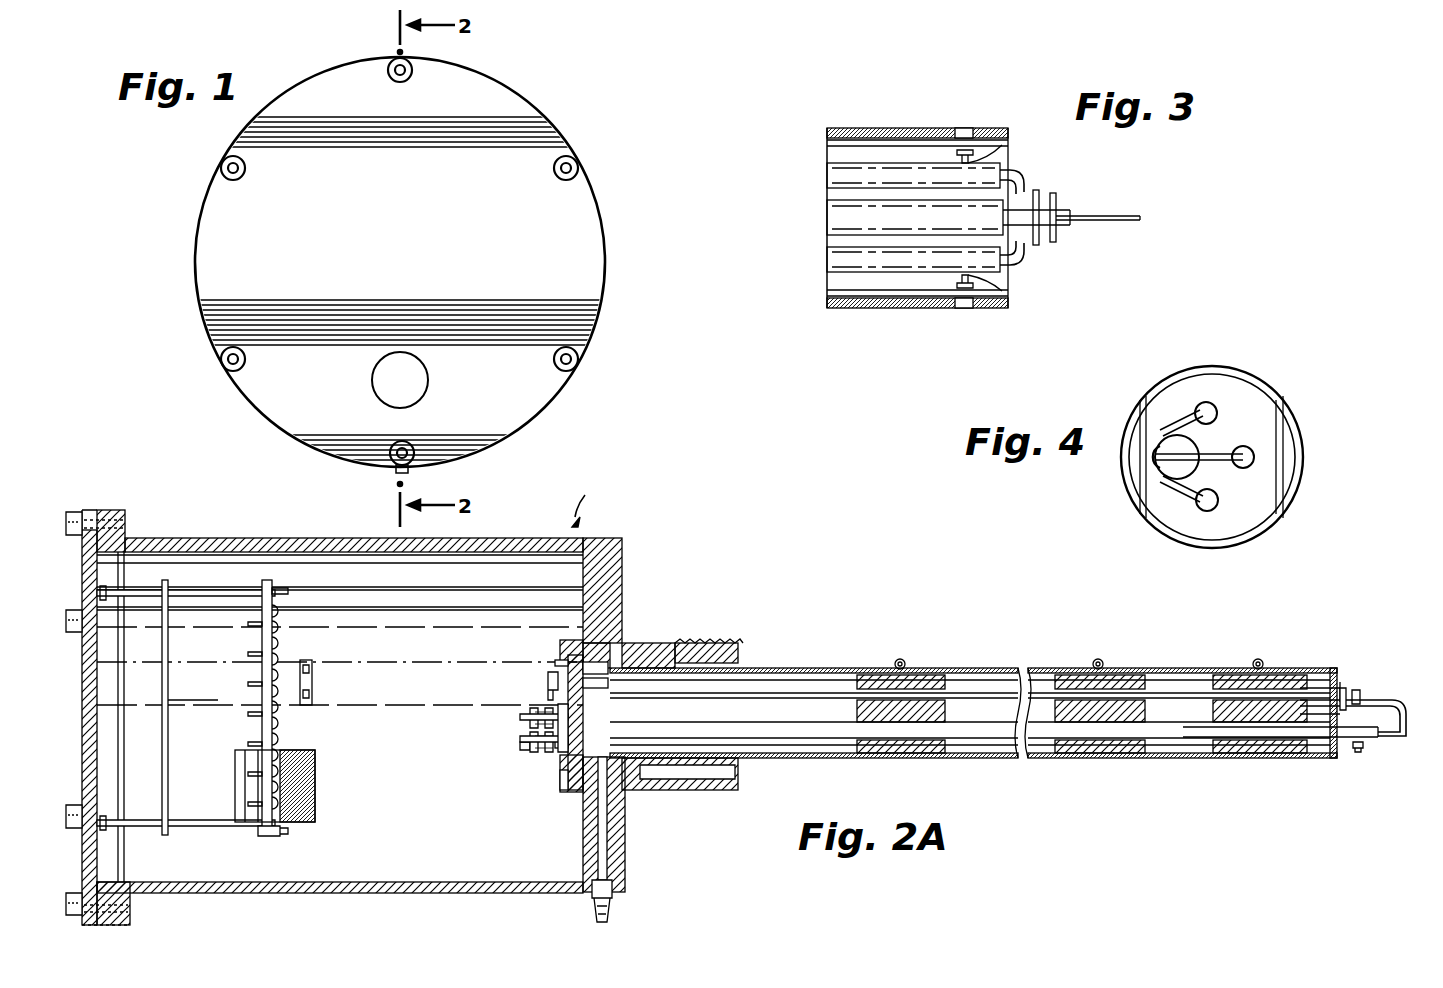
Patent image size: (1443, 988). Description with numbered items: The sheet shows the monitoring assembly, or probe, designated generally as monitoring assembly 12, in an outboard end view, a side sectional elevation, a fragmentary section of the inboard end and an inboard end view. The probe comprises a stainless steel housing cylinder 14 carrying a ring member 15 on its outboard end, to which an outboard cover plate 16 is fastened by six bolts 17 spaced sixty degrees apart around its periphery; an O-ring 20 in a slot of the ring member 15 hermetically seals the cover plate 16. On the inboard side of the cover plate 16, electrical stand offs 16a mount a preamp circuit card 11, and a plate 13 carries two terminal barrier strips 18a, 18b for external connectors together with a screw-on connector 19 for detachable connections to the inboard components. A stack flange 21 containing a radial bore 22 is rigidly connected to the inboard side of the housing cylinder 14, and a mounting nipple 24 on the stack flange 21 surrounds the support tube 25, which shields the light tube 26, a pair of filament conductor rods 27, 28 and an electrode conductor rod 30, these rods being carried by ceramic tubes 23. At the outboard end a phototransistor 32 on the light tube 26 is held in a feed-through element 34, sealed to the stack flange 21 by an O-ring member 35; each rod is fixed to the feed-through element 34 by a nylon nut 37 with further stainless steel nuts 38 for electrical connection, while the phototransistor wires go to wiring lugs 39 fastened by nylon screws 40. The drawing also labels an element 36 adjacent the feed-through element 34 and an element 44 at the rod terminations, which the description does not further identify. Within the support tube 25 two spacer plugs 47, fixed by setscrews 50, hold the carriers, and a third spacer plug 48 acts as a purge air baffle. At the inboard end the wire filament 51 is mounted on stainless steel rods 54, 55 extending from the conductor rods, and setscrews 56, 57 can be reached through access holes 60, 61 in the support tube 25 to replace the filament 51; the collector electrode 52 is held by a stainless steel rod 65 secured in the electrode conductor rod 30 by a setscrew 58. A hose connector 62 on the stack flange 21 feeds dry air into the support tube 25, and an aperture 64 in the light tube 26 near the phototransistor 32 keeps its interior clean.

In FIG. 2A, the preamp circuit card 11 is at (168, 754).
In FIG. 2A, the monitoring assembly 12 is at (593, 504).
In FIG. 2A, the plate 13 is at (273, 838).
In FIG. 2A, the housing cylinder 14 is at (378, 540).
In FIG. 2A, the ring member 15 is at (125, 536).
In FIG. 1, the outboard cover plate 16 is at (514, 117).
In FIG. 2A, the outboard cover plate 16 is at (82, 680).
In FIG. 2A, the electrical stand offs 16a is at (190, 828).
In FIG. 1, the bolts 17 is at (408, 444).
In FIG. 2A, the bolts 17 is at (74, 894).
In FIG. 2A, the terminal barrier strip 18a is at (262, 642).
In FIG. 2A, the terminal barrier strip 18b is at (314, 662).
In FIG. 2A, the screw-on connector 19 is at (314, 792).
In FIG. 2A, the O-ring 20 is at (108, 884).
In FIG. 2A, the stack flange 21 is at (620, 566).
In FIG. 2A, the radial bore 22 is at (607, 838).
In FIG. 2A, the ceramic tubes 23 is at (994, 674).
In FIG. 2A, the mounting nipple 24 is at (644, 648).
In FIG. 4, the support tube 25 is at (1292, 436).
In FIG. 2A, the support tube 25 is at (810, 668).
In FIG. 3, the light tube 26 is at (832, 220).
In FIG. 4, the light tube 26 is at (1152, 460).
In FIG. 2A, the light tube 26 is at (1282, 682).
In FIG. 3, the filament conductor rod 27 is at (832, 264).
In FIG. 4, the filament conductor rod 27 is at (1216, 506).
In FIG. 2A, the filament conductor rod 27 is at (1330, 680).
In FIG. 3, the filament conductor rod 28 is at (828, 174).
In FIG. 4, the filament conductor rod 28 is at (1217, 424).
In FIG. 3, the electrode conductor rod 30 is at (1072, 232).
In FIG. 4, the electrode conductor rod 30 is at (1252, 456).
In FIG. 2A, the electrode conductor rod 30 is at (1370, 742).
In FIG. 2A, the phototransistor 32 is at (594, 674).
In FIG. 2A, the feed-through element 34 is at (586, 656).
In FIG. 2A, the O-ring member 35 is at (560, 788).
In FIG. 2A, the spacer 36 is at (572, 794).
In FIG. 2A, the nylon nut 37 is at (564, 754).
In FIG. 2A, the stainless steel nuts 38 is at (538, 708).
In FIG. 2A, the wiring lugs 39 is at (558, 662).
In FIG. 2A, the nylon screws 40 is at (548, 676).
In FIG. 2A, the stud 44 is at (520, 718).
In FIG. 2A, the spacer plugs 47 is at (1130, 672).
In FIG. 2A, the third spacer plug 48 is at (1296, 760).
In FIG. 2A, the setscrews 50 is at (1254, 660).
In FIG. 3, the wire filament 51 is at (1038, 194).
In FIG. 2A, the wire filament 51 is at (1346, 688).
In FIG. 3, the collector electrode 52 is at (1056, 202).
In FIG. 4, the collector electrode 52 is at (1158, 444).
In FIG. 2A, the collector electrode 52 is at (1362, 698).
In FIG. 3, the stainless steel rod 54 is at (1024, 256).
In FIG. 4, the stainless steel rod 54 is at (1187, 502).
In FIG. 3, the stainless steel rod 55 is at (1026, 186).
In FIG. 4, the stainless steel rod 55 is at (1184, 422).
In FIG. 3, the setscrew 56 is at (998, 290).
In FIG. 3, the setscrew 57 is at (996, 150).
In FIG. 2A, the setscrew 58 is at (1358, 754).
In FIG. 3, the access hole 60 is at (967, 309).
In FIG. 3, the access hole 61 is at (967, 128).
In FIG. 2A, the hose connector 62 is at (612, 904).
In FIG. 2A, the aperture 64 is at (700, 640).
In FIG. 3, the stainless steel rod 65 is at (1122, 216).
In FIG. 4, the stainless steel rod 65 is at (1222, 466).
In FIG. 2A, the stainless steel rod 65 is at (1404, 720).